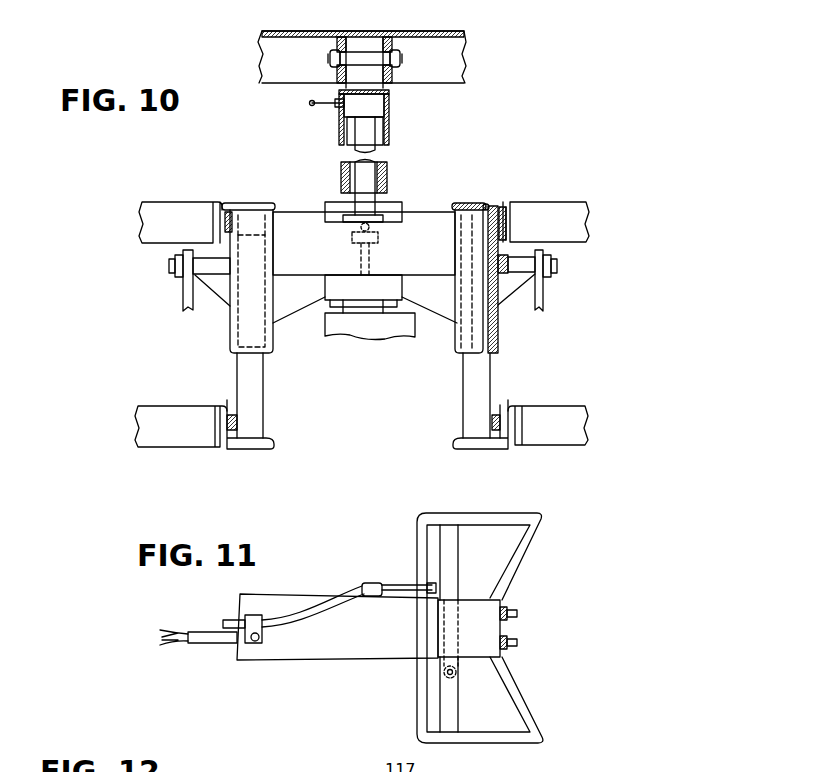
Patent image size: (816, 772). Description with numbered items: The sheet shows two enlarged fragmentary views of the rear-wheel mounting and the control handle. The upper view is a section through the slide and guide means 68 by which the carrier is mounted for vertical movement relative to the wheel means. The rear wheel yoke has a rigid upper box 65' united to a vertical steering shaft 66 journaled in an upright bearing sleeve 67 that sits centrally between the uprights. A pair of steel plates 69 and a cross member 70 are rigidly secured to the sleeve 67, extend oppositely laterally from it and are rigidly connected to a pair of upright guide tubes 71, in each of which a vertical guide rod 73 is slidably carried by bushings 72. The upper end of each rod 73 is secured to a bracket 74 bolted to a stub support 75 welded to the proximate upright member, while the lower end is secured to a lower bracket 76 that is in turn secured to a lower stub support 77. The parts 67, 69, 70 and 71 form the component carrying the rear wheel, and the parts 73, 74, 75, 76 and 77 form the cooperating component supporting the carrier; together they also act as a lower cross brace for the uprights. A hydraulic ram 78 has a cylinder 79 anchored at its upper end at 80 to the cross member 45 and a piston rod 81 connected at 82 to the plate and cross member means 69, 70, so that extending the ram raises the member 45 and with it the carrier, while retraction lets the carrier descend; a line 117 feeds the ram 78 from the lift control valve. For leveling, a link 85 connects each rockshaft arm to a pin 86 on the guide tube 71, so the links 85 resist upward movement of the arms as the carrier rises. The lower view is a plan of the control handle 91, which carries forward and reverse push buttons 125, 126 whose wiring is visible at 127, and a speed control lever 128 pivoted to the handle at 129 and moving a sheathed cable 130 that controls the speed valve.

In FIG. 10, the cross member 45 is at (466, 41).
In FIG. 10, the anchor point 80 is at (408, 60).
In FIG. 10, the hydraulic ram 78 is at (390, 104).
In FIG. 10, the cylinder 79 is at (390, 133).
In FIG. 10, the fluid line 117 is at (310, 103).
In FIG. 10, the piston rod 81 is at (368, 177).
In FIG. 10, the cross member 70 is at (427, 206).
In FIG. 10, the connection point 82 is at (346, 227).
In FIG. 10, the steel plates 69 is at (290, 283).
In FIG. 10, the bearing sleeve 67 is at (334, 295).
In FIG. 10, the steering shaft 66 is at (362, 306).
In FIG. 10, the upper box 65' is at (397, 356).
In FIG. 10, the slide and guide means 68 is at (336, 370).
In FIG. 10, the bracket 74 is at (253, 203).
In FIG. 10, the guide tubes 71 is at (230, 352).
In FIG. 10, the bushings 72 is at (490, 204).
In FIG. 10, the stub support 75 is at (160, 207).
In FIG. 10, the pin 86 is at (169, 266).
In FIG. 10, the link 85 is at (183, 297).
In FIG. 10, the guide rod 73 is at (258, 416).
In FIG. 10, the lower bracket 76 is at (267, 449).
In FIG. 10, the lower stub support 77 is at (171, 440).
In FIG. 11, the control handle 91 is at (548, 740).
In FIG. 11, the speed control lever 128 is at (455, 548).
In FIG. 11, the pivot 129 is at (456, 676).
In FIG. 11, the forward push button 125 is at (520, 615).
In FIG. 11, the reverse push button 126 is at (520, 642).
In FIG. 11, the sheathed cable 130 is at (348, 586).
In FIG. 11, the wiring 127 is at (160, 638).